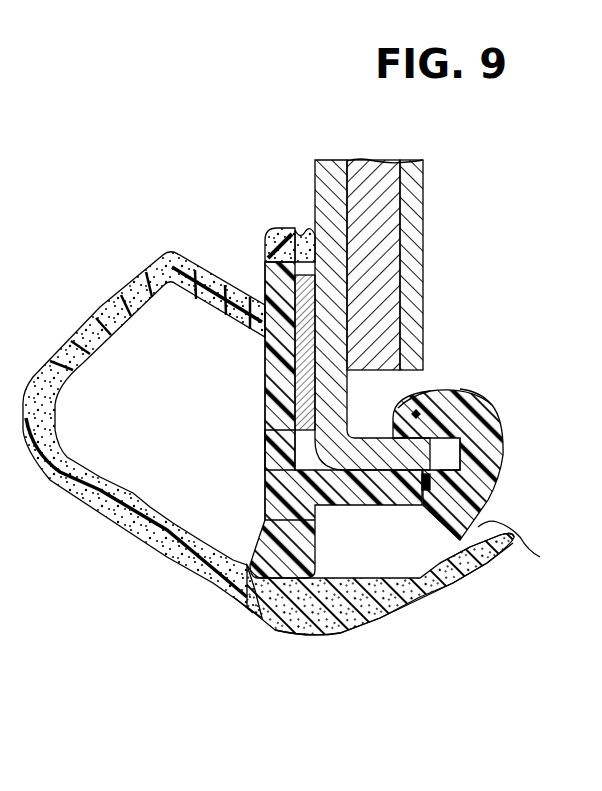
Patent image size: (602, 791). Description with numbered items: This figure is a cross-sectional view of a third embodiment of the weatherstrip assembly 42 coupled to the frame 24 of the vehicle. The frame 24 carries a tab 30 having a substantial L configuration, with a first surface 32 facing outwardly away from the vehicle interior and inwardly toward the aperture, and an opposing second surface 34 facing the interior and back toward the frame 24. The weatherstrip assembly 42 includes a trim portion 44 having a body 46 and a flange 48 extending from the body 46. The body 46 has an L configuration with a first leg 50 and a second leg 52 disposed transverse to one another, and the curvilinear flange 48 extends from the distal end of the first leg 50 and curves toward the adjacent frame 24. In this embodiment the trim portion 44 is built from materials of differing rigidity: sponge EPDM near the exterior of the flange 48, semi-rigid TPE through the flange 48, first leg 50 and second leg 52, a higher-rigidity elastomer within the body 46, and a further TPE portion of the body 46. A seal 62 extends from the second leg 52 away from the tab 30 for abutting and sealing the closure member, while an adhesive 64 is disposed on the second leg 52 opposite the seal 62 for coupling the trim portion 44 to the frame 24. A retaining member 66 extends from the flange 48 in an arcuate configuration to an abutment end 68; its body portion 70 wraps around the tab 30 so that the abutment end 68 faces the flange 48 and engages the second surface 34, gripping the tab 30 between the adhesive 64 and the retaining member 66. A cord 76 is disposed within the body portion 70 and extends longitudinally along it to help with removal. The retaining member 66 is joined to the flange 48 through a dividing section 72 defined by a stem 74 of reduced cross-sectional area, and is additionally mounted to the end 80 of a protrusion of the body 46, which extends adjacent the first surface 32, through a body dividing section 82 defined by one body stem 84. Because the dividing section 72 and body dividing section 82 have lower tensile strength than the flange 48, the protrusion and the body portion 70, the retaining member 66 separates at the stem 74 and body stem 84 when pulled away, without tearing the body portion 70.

The frame 24 is at (300, 142).
The tab 30 is at (313, 268).
The first surface 32 is at (300, 229).
The second surface 34 is at (366, 440).
The weatherstrip assembly 42 is at (414, 657).
The trim portion 44 is at (240, 621).
The body 46 is at (260, 384).
The flange 48 is at (470, 582).
The first leg 50 is at (377, 614).
The second leg 52 is at (278, 449).
The seal 62 is at (107, 503).
The adhesive 64 is at (300, 405).
The retaining member 66 is at (484, 397).
The abutment end 68 is at (393, 440).
The body portion 70 is at (480, 410).
The dividing section 72 is at (492, 515).
The stem 74 is at (540, 557).
The cord 76 is at (430, 391).
The end 80 is at (495, 440).
The body dividing section 82 is at (424, 512).
The body stem 84 is at (490, 470).